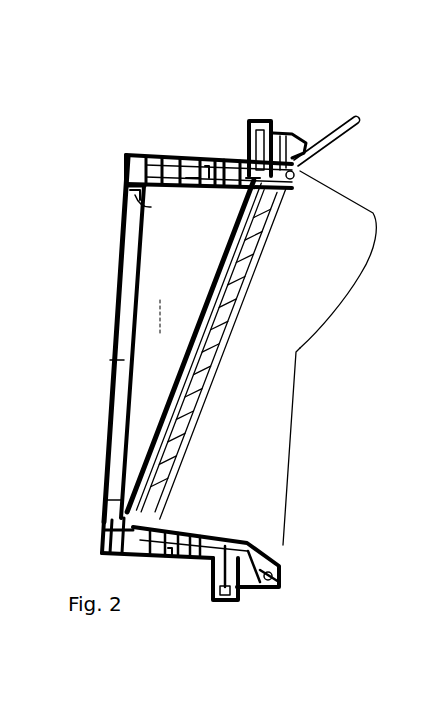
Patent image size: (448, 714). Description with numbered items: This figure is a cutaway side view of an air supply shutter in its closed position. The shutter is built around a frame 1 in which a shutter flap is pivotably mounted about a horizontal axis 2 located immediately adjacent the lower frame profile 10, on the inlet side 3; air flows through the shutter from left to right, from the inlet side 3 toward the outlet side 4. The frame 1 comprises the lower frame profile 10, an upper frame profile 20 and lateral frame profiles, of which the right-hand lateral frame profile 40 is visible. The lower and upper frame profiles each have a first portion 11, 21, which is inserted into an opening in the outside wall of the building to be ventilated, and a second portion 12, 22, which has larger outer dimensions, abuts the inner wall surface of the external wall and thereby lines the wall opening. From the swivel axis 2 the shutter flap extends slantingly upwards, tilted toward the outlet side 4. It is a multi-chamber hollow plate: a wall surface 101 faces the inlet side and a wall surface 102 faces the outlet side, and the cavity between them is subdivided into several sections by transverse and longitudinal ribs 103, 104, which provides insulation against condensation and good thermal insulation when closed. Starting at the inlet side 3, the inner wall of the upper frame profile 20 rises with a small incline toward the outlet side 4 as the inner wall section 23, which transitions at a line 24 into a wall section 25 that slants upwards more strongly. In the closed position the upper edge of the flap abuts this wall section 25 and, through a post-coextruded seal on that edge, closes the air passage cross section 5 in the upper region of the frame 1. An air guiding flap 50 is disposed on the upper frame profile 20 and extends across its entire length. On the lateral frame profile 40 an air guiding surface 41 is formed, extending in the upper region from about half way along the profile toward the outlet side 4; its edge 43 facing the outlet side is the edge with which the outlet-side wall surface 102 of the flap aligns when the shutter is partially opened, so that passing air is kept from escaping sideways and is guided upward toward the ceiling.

The frame 1 is at (112, 176).
The axis 2 is at (100, 488).
The inlet side 3 is at (72, 382).
The outlet side 4 is at (339, 348).
The air passage cross section 5 is at (154, 317).
The lower frame profile 10 is at (130, 568).
The first portion 11 is at (172, 560).
The second portion 12 is at (210, 590).
The upper frame profile 20 is at (172, 135).
The first portion 21 is at (207, 172).
The second portion 22 is at (262, 118).
The inner wall section 23 is at (190, 195).
The line 24 is at (245, 191).
The wall section 25 is at (300, 172).
The lateral frame profile 40 is at (115, 418).
The air guiding surface 41 is at (346, 219).
The edge 43 is at (368, 261).
The air guiding flap 50 is at (338, 109).
The wall surface 101 is at (173, 349).
The wall surface 102 is at (227, 373).
The transverse ribs 103 is at (235, 313).
The longitudinal ribs 104 is at (172, 461).